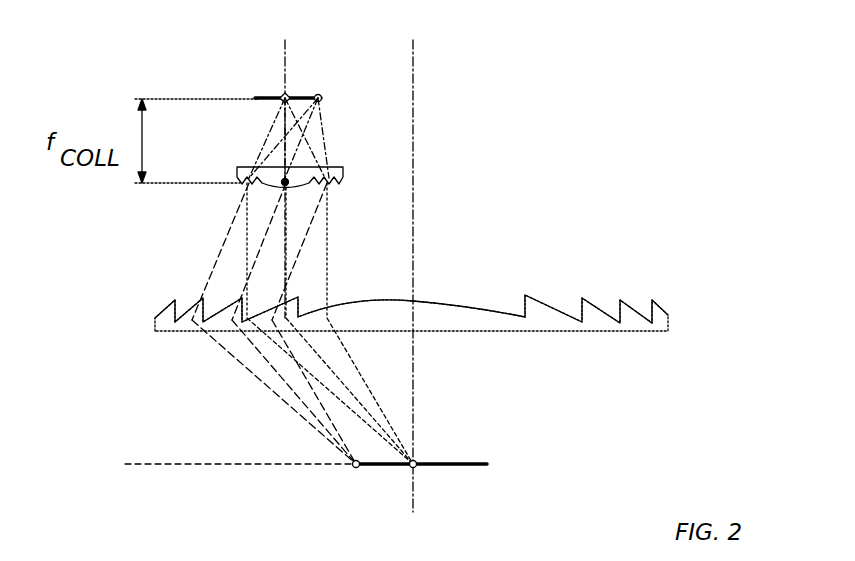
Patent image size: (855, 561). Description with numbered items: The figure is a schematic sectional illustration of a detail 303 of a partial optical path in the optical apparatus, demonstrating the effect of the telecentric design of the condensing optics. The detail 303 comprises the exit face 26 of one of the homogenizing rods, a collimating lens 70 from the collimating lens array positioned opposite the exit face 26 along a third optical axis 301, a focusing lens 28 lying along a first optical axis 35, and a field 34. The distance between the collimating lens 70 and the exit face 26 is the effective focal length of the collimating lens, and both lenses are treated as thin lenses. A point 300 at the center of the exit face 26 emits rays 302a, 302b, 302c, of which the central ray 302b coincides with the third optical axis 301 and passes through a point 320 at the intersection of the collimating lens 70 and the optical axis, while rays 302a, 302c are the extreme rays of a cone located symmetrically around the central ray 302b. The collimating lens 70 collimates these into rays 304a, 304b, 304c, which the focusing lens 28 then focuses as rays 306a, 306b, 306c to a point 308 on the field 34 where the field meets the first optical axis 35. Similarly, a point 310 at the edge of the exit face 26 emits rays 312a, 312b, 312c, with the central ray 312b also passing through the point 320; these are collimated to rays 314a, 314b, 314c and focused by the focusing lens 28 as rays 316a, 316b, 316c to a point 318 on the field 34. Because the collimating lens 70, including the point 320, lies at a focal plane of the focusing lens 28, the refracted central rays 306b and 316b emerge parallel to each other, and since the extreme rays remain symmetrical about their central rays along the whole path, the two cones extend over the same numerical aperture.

The exit face 26 is at (300, 97).
The focusing lens 28 is at (671, 326).
The field 34 is at (390, 467).
The first optical axis 35 is at (413, 59).
The collimating lens 70 is at (340, 170).
The point at the center of exit face 300 is at (281, 97).
The third optical axis 301 is at (285, 63).
The ray 302a is at (279, 110).
The central ray 302b is at (283, 114).
The ray 302c is at (282, 140).
The detail 303 is at (610, 110).
The collimated ray 304a is at (328, 243).
The collimated ray 304b is at (277, 302).
The collimated ray 304c is at (245, 218).
The focused ray 306a is at (342, 348).
The focused central ray 306b is at (360, 402).
The focused ray 306c is at (374, 430).
The point on field 308 is at (417, 467).
The point at the edge of exit face 310 is at (322, 94).
The ray 312a is at (307, 113).
The central ray 312b is at (310, 114).
The ray 312c is at (322, 136).
The collimated ray 314a is at (300, 253).
The collimated ray 314b is at (262, 249).
The collimated ray 314c is at (239, 208).
The focused ray 316a is at (309, 383).
The focused central ray 316b is at (268, 365).
The focused ray 316c is at (232, 355).
The point on field 318 is at (354, 467).
The point on collimating lens 320 is at (289, 184).